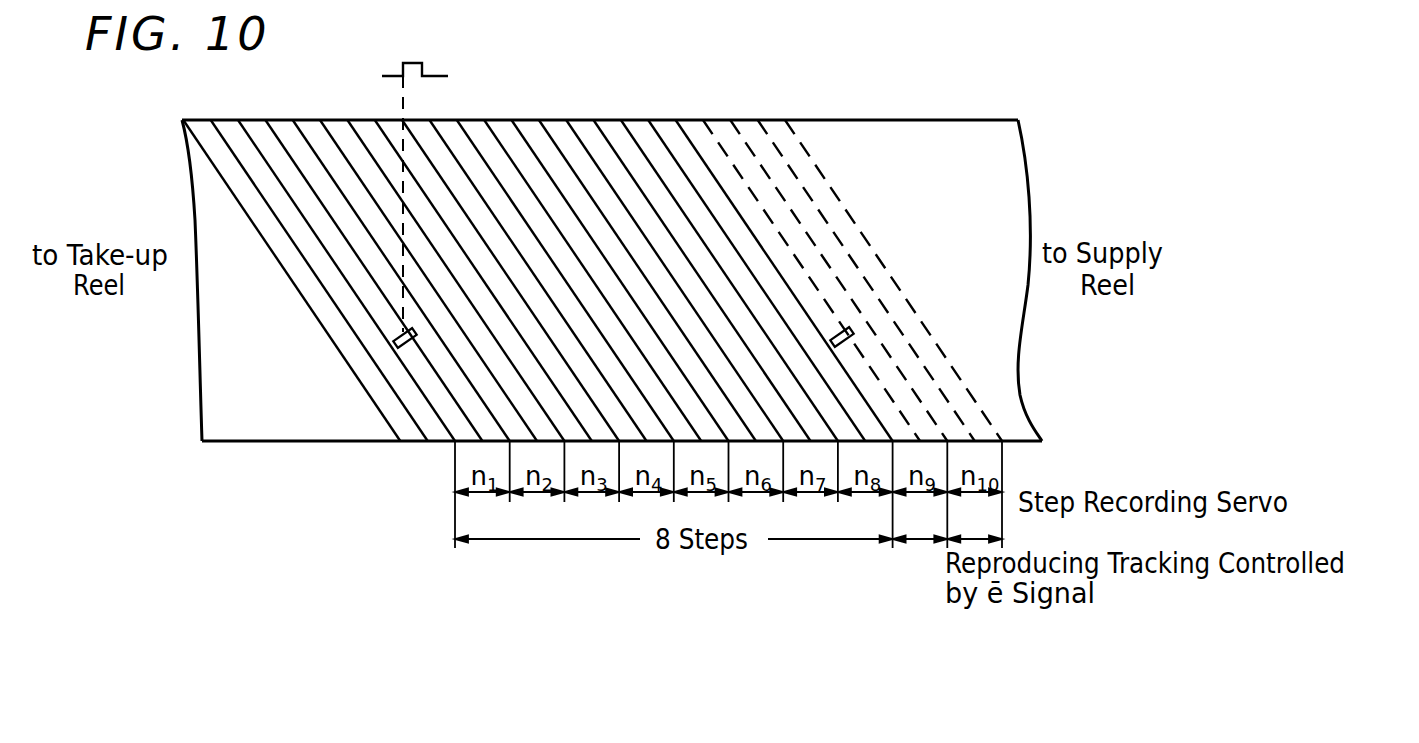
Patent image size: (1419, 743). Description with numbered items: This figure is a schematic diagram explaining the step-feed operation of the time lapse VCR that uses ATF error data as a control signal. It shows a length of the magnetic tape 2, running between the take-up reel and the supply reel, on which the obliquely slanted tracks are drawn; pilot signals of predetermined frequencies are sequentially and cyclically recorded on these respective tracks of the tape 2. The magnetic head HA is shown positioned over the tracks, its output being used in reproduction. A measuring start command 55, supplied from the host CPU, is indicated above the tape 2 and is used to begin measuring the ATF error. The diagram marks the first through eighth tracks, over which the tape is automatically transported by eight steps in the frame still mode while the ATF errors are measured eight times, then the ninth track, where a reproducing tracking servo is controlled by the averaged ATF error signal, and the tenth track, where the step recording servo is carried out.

The tape 2 is at (891, 128).
The measuring start command 55 is at (423, 63).
The magnetic head HA is at (410, 350).